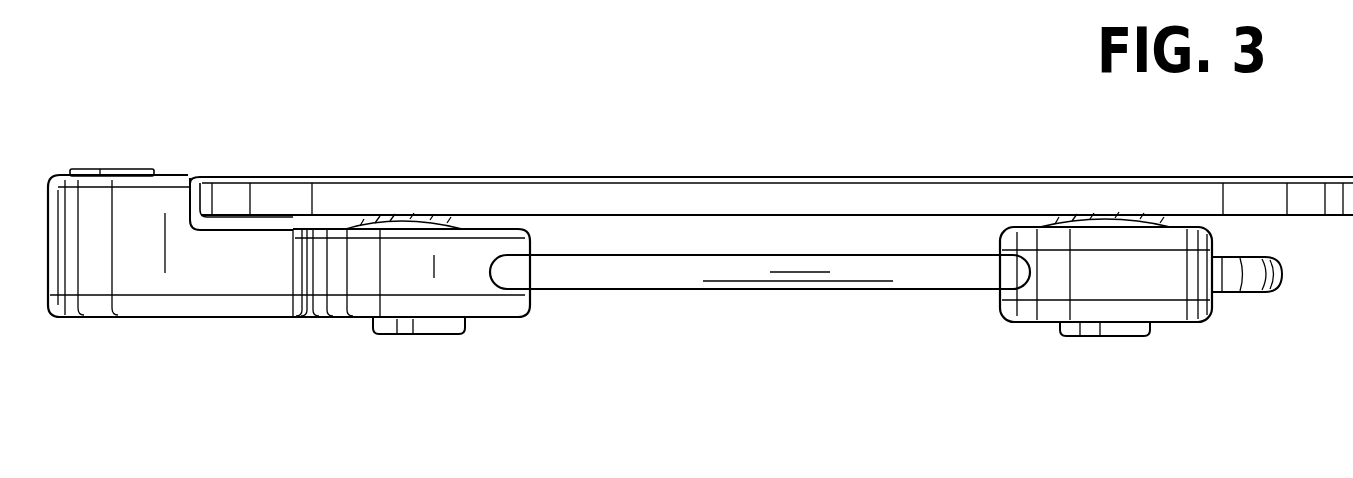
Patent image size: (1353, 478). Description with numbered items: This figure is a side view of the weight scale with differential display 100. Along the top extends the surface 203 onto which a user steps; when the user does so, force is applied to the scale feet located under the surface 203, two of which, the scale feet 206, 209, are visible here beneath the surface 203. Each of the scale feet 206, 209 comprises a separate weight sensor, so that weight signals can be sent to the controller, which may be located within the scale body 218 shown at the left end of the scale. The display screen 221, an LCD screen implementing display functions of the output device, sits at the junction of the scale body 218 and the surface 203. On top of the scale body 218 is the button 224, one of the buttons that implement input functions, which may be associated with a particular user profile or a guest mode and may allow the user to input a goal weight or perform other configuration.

The weight scale with differential display 100 is at (611, 108).
The surface 203 is at (660, 178).
The scale foot 206 is at (1125, 218).
The scale foot 209 is at (450, 217).
The scale body 218 is at (190, 275).
The display screen 221 is at (277, 222).
The button 224 is at (98, 168).